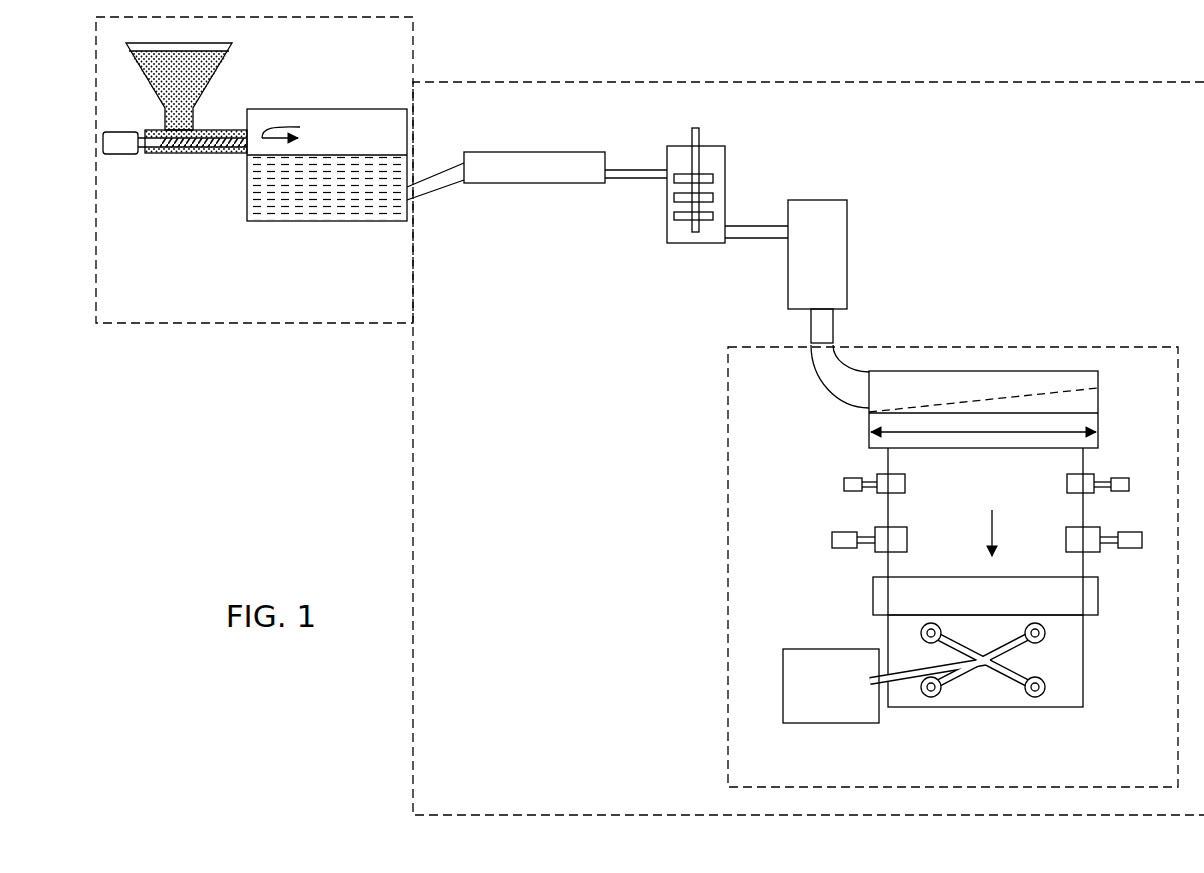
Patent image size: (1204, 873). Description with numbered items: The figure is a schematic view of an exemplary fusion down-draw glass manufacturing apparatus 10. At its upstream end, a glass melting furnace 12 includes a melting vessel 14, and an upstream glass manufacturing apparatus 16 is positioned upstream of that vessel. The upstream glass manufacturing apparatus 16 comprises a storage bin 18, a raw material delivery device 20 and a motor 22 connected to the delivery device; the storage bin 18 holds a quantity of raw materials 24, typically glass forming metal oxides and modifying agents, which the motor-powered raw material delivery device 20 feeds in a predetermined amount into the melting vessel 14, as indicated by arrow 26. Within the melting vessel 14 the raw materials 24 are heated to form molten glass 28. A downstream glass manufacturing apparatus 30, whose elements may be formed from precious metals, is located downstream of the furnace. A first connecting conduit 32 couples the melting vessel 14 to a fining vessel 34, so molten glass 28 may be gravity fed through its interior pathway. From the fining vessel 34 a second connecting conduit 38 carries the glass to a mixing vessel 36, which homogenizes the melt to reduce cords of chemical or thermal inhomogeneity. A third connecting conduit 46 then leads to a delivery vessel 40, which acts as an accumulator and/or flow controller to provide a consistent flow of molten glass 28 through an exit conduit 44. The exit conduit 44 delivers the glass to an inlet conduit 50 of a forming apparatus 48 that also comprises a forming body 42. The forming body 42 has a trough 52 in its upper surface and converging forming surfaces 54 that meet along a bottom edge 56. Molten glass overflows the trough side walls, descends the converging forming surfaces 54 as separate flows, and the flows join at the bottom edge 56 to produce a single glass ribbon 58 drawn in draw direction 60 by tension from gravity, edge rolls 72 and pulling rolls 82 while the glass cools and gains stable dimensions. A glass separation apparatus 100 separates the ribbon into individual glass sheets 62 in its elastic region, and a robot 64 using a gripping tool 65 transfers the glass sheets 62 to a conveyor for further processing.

The glass manufacturing apparatus 10 is at (333, 390).
The glass melting furnace 12 is at (258, 323).
The melting vessel 14 is at (293, 110).
The upstream glass manufacturing apparatus 16 is at (146, 180).
The storage bin 18 is at (225, 67).
The raw material delivery device 20 is at (215, 153).
The motor 22 is at (115, 132).
The raw materials 24 is at (187, 82).
The arrow 26 is at (298, 128).
The molten glass 28 is at (272, 212).
The downstream glass manufacturing apparatus 30 is at (670, 82).
The first connecting conduit 32 is at (422, 188).
The fining vessel 34 is at (520, 183).
The mixing vessel 36 is at (667, 226).
The second connecting conduit 38 is at (635, 179).
The delivery vessel 40 is at (788, 288).
The forming body 42 is at (1098, 408).
The exit conduit 44 is at (840, 327).
The third connecting conduit 46 is at (754, 239).
The forming apparatus 48 is at (990, 347).
The inlet conduit 50 is at (828, 392).
The trough 52 is at (1036, 392).
The converging forming surfaces 54 is at (870, 445).
The bottom edge 56 is at (1085, 450).
The glass ribbon 58 is at (888, 500).
The draw direction 60 is at (993, 532).
The glass sheets 62 is at (1012, 685).
The robot 64 is at (803, 648).
The gripping tool 65 is at (1008, 677).
The edge rolls 72 is at (906, 484).
The pulling rolls 82 is at (907, 540).
The glass separation apparatus 100 is at (1098, 585).